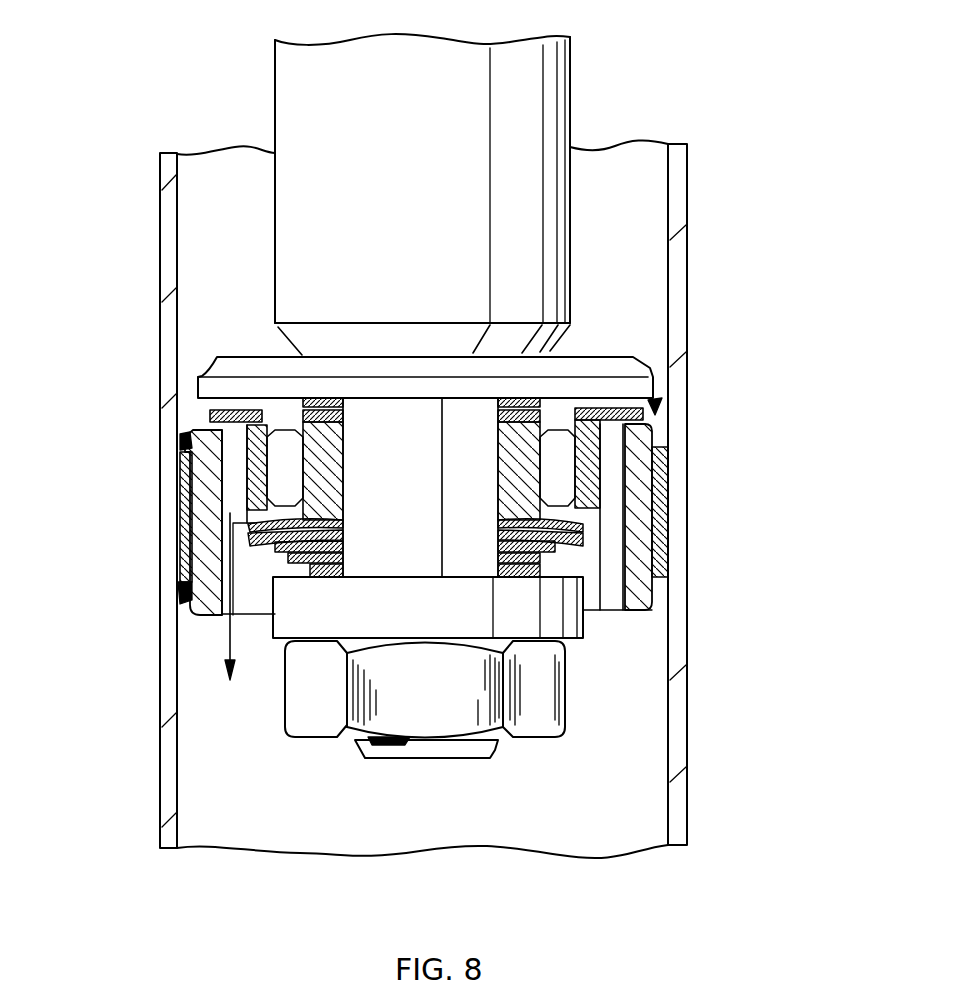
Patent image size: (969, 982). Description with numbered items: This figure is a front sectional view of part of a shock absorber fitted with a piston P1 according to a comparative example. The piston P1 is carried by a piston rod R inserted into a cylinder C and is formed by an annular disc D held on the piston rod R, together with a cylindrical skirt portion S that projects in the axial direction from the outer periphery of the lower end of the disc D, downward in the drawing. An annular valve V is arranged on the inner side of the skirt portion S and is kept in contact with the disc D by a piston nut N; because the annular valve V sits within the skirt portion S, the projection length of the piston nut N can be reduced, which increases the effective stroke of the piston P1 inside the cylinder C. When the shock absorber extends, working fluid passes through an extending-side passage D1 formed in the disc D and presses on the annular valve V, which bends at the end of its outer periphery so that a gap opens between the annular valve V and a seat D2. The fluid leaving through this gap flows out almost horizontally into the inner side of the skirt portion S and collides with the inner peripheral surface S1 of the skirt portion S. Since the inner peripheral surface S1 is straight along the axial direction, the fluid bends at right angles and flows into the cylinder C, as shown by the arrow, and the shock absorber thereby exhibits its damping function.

The cylinder C is at (163, 273).
The piston rod R is at (572, 92).
The piston P1 is at (657, 408).
The annular disc D is at (192, 426).
The extending-side passage D1 is at (563, 460).
The seat D2 is at (583, 518).
The skirt portion S is at (183, 598).
The inner peripheral surface S1 is at (228, 612).
The annular valve V is at (585, 535).
The piston nut N is at (550, 740).